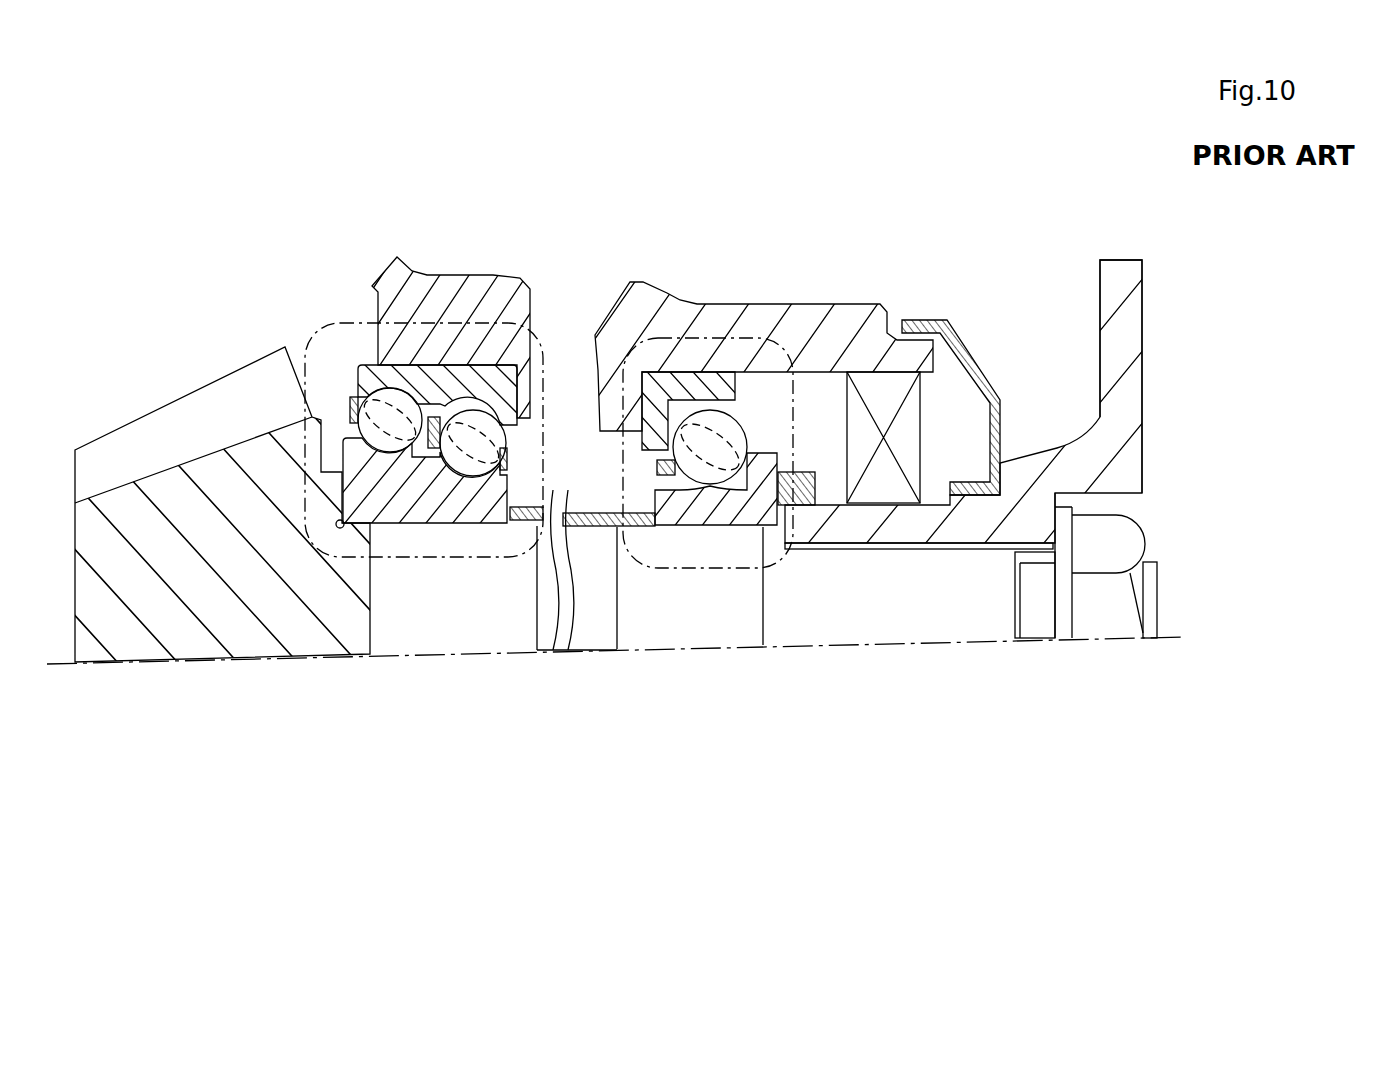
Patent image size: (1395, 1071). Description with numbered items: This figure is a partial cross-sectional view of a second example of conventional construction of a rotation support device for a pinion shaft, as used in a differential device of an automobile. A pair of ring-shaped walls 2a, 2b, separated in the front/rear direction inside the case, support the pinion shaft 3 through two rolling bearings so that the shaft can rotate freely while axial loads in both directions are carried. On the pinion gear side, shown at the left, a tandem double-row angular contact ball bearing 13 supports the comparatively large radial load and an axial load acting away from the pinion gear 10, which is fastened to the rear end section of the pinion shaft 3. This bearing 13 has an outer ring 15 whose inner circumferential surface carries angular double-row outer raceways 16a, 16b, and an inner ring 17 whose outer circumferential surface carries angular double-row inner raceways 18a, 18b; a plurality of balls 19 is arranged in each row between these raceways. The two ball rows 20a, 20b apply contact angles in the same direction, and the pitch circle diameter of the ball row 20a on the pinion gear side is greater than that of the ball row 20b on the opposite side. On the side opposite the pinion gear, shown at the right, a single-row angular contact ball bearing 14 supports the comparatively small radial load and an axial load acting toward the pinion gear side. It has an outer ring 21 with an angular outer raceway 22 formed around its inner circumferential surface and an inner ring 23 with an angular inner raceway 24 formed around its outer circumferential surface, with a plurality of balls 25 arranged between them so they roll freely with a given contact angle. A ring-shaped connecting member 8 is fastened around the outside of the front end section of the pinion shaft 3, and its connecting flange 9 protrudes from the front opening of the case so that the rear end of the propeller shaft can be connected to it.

The ring-shaped wall 2a is at (468, 293).
The ring-shaped wall 2b is at (762, 450).
The pinion shaft 3 is at (510, 625).
The connecting member 8 is at (1027, 470).
The connecting flange 9 is at (1123, 280).
The pinion gear 10 is at (163, 428).
The tandem double-row angular contact ball bearing 13 is at (385, 380).
The single-row angular contact ball bearing 14 is at (732, 362).
The outer ring 15 is at (470, 372).
The outer raceway 16a is at (405, 393).
The outer raceway 16b is at (533, 367).
The inner ring 17 is at (425, 505).
The inner raceway 18a is at (388, 452).
The inner raceway 18b is at (470, 476).
The balls 19 is at (345, 402).
The ball row 20a is at (392, 395).
The ball row 20b is at (530, 405).
The outer ring 21 is at (668, 387).
The outer raceway 22 is at (697, 410).
The inner ring 23 is at (700, 513).
The inner raceway 24 is at (720, 480).
The balls 25 is at (722, 425).